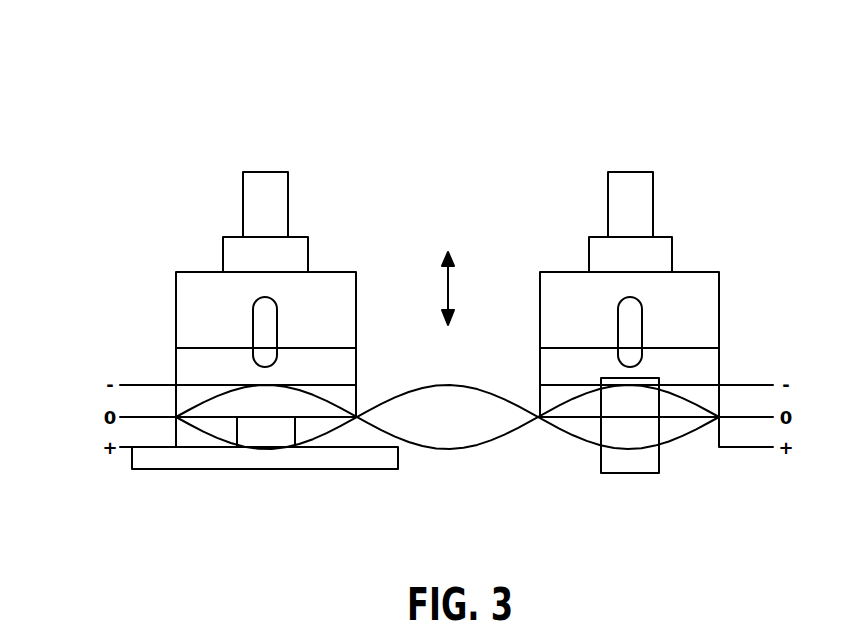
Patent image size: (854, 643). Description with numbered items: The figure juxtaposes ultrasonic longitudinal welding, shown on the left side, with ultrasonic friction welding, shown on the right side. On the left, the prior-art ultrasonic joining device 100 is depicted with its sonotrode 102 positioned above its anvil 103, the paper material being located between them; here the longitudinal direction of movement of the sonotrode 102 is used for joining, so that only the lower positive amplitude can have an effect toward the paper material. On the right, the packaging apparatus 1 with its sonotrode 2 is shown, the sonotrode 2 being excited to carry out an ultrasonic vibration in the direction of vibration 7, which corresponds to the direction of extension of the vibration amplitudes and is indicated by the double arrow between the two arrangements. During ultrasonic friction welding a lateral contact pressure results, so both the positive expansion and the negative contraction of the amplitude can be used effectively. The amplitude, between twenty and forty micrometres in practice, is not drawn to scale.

The ultrasonic joining device 100 is at (257, 118).
The sonotrode 102 is at (337, 282).
The anvil 103 is at (353, 458).
The packaging apparatus 1 is at (614, 118).
The sonotrode 2 is at (699, 282).
The direction of vibration 7 is at (448, 290).